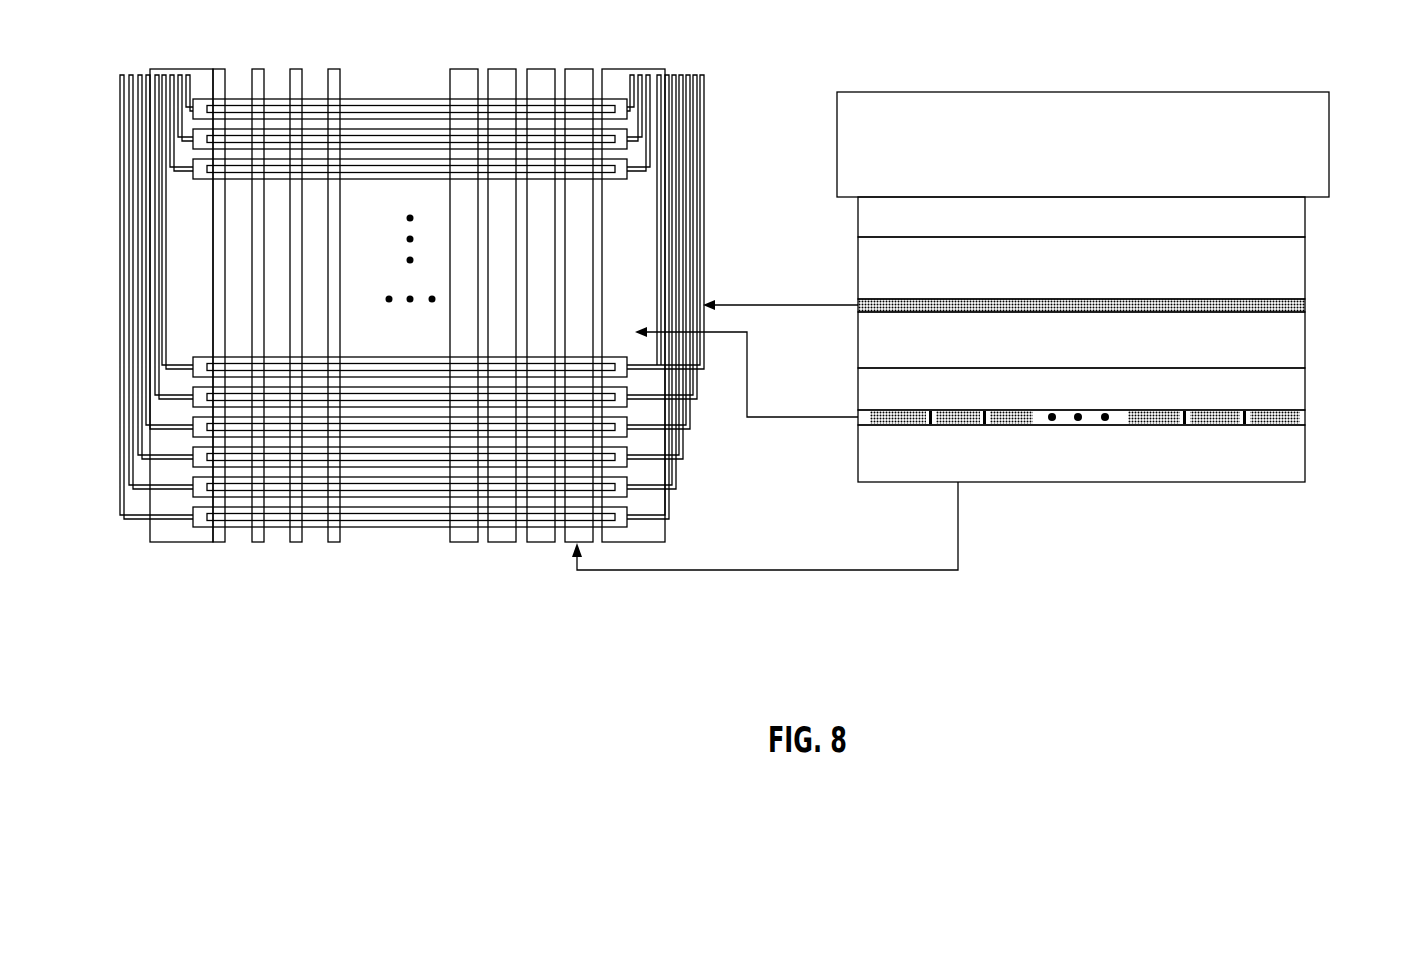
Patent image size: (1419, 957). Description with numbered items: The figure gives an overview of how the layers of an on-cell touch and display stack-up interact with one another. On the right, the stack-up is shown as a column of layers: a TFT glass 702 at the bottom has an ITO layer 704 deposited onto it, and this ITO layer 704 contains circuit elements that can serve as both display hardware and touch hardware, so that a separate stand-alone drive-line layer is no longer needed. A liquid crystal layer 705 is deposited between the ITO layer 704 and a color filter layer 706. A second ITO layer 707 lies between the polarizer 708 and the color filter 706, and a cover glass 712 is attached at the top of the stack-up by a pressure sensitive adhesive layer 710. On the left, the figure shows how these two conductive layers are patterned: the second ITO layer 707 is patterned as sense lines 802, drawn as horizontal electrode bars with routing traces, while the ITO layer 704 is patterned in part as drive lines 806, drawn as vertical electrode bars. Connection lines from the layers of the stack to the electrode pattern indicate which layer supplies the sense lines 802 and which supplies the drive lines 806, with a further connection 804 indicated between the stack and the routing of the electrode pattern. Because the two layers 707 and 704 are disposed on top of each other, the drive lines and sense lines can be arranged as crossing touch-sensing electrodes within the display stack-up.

The TFT glass 702 is at (1300, 468).
The ITO layer 704 is at (1297, 415).
The liquid crystal layer 705 is at (1300, 390).
The color filter layer 706 is at (1300, 340).
The second ITO layer 707 is at (1300, 305).
The polarizer 708 is at (1300, 268).
The pressure sensitive adhesive layer 710 is at (1300, 220).
The cover glass 712 is at (1323, 147).
The sense lines 802 is at (767, 305).
The touch drive electrode routing traces 804 is at (772, 415).
The drive lines 806 is at (768, 570).